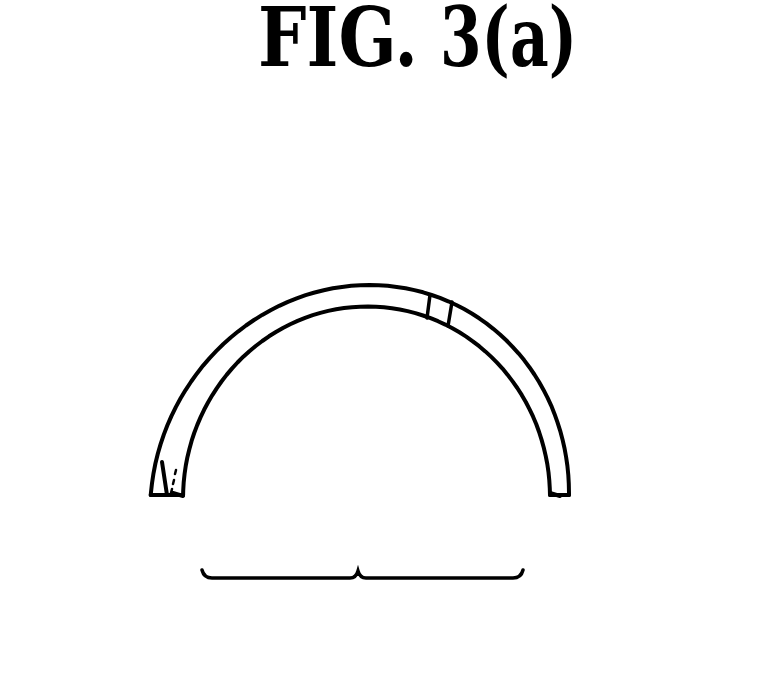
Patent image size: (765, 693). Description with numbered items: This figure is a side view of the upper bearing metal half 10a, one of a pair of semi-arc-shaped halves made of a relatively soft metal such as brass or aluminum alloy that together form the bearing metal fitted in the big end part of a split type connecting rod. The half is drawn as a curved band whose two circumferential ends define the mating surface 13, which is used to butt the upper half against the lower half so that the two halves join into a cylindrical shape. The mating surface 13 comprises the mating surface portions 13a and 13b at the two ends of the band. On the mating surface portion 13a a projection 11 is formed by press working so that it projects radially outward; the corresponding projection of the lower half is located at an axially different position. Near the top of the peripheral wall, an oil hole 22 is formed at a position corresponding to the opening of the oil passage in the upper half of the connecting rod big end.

The upper bearing metal half 10a is at (325, 282).
The oil hole 22 is at (457, 302).
The projection 11 is at (150, 487).
The mating surface portion 13a is at (175, 495).
The mating surface portion 13b is at (550, 497).
The mating surface 13 is at (362, 608).